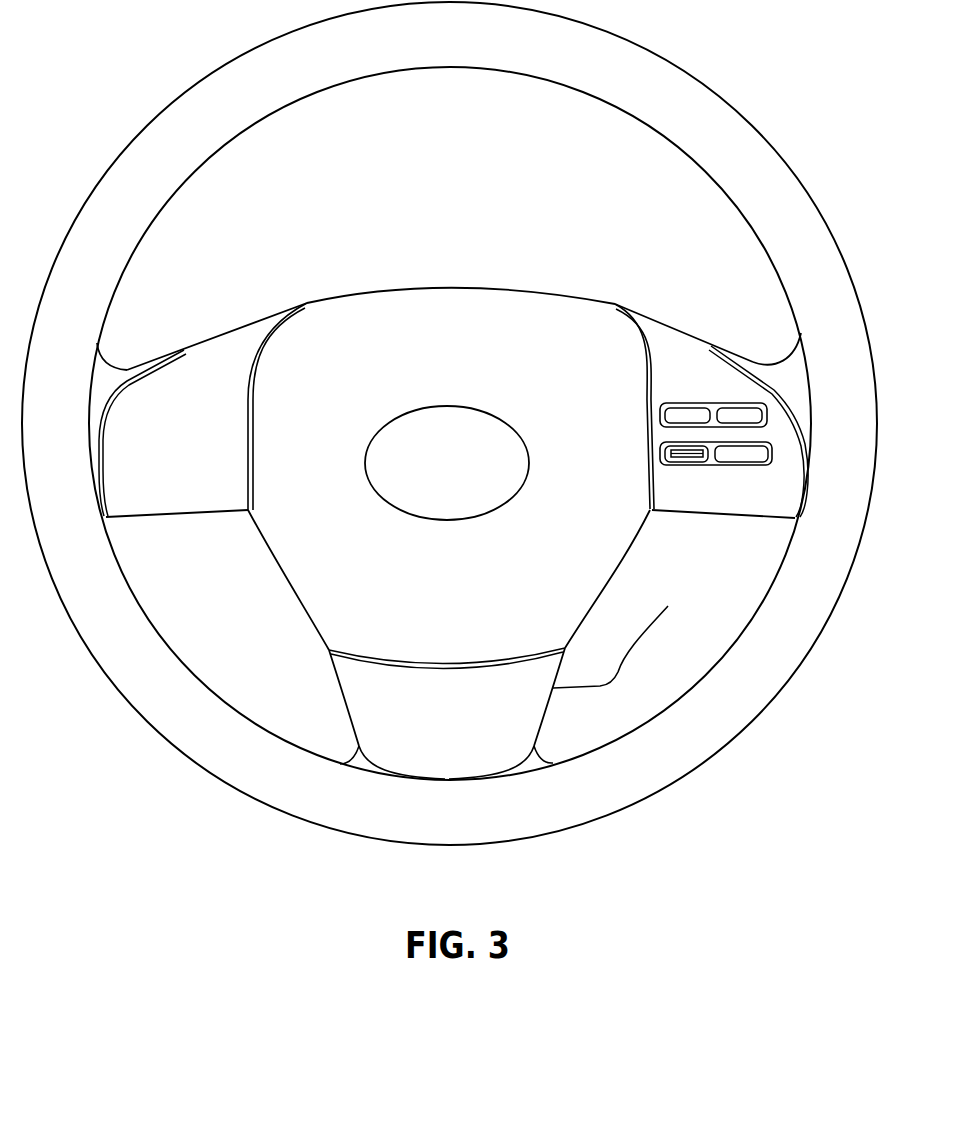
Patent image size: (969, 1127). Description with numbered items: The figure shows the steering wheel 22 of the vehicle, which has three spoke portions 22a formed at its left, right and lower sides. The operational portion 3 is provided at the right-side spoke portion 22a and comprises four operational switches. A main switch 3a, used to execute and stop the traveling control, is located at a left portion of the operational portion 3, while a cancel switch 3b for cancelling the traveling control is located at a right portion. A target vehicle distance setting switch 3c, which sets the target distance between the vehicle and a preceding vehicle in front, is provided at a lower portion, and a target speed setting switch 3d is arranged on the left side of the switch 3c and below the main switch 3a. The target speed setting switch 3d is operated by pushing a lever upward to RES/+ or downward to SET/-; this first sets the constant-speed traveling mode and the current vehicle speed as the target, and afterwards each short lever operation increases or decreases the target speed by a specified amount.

The steering wheel 22 is at (707, 86).
The spoke portion 22a is at (232, 332).
The operational portion 3 is at (718, 391).
The main switch 3a is at (682, 407).
The cancel switch 3b is at (742, 407).
The target vehicle distance setting switch 3c is at (750, 462).
The target speed setting switch 3d is at (708, 453).